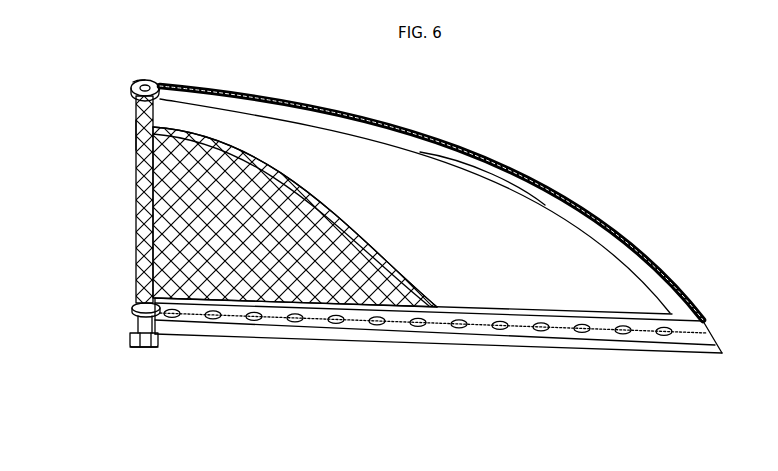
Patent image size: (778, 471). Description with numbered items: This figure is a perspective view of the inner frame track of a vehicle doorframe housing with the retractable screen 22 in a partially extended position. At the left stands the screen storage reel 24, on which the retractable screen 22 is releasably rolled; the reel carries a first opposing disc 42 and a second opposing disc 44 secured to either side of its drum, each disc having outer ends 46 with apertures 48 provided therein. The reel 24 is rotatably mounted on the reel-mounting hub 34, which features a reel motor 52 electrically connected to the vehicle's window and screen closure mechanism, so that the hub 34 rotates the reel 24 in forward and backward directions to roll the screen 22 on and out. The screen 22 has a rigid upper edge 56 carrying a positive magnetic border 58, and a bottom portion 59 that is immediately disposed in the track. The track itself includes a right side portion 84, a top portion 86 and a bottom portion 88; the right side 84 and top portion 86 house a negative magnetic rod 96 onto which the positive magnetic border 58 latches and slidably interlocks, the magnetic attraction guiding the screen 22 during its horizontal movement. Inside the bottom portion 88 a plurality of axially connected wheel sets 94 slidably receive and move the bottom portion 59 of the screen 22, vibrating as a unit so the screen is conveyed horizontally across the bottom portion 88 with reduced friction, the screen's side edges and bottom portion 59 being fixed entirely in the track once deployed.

The retractable screen 22 is at (136, 186).
The screen storage reel 24 is at (136, 134).
The reel-mounting hub 34 is at (139, 349).
The first opposing disc 42 is at (151, 84).
The second opposing disc 44 is at (132, 305).
The outer ends 46 is at (138, 81).
The apertures 48 is at (162, 88).
The reel motor 52 is at (136, 328).
The rigid upper edge 56 is at (296, 180).
The positive magnetic border 58 is at (332, 198).
The bottom portion 59 is at (277, 322).
The right side portion 84 is at (583, 238).
The top portion 86 is at (436, 135).
The bottom portion 88 is at (190, 322).
The wheel sets 94 is at (500, 337).
The negative magnetic rod 96 is at (492, 184).